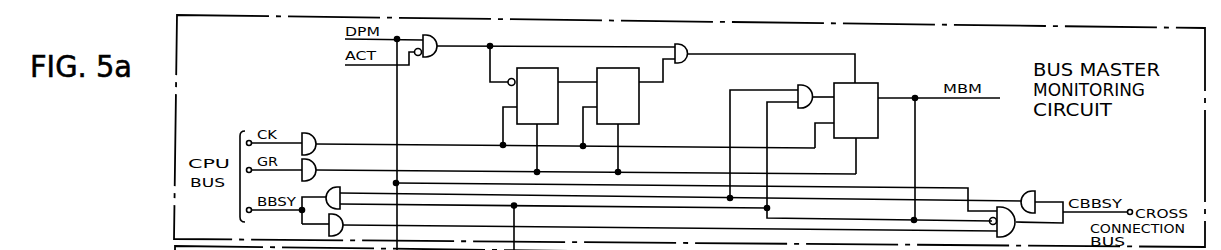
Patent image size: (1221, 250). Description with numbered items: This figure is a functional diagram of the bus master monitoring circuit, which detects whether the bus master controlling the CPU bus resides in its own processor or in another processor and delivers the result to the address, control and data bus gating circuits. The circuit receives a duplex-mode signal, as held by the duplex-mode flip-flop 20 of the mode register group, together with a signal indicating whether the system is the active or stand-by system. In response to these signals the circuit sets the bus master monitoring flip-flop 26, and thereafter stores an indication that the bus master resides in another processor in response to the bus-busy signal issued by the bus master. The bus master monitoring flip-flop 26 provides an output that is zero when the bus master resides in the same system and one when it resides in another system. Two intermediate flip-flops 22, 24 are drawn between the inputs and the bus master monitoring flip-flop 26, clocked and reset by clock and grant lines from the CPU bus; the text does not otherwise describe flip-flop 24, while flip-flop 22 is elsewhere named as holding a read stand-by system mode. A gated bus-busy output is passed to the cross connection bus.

The MBM flip-flop 26 is at (867, 139).
The MAR flip-flop 22 is at (537, 96).
The second D flip-flop 24 is at (618, 96).
The DPM flip-flop 20 is at (426, 46).